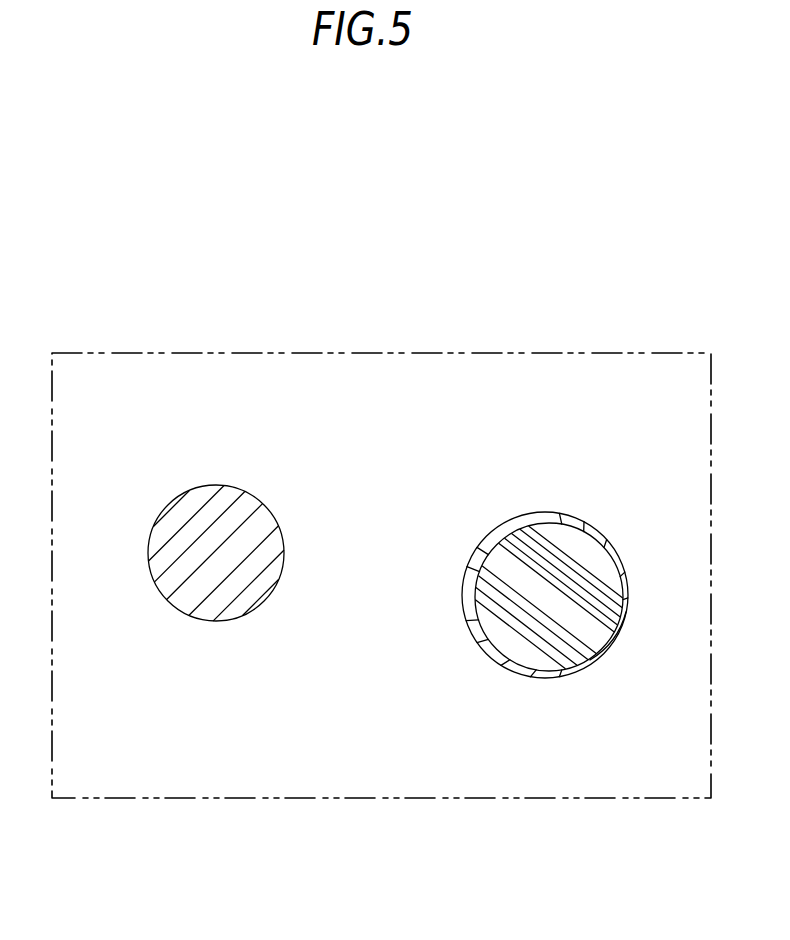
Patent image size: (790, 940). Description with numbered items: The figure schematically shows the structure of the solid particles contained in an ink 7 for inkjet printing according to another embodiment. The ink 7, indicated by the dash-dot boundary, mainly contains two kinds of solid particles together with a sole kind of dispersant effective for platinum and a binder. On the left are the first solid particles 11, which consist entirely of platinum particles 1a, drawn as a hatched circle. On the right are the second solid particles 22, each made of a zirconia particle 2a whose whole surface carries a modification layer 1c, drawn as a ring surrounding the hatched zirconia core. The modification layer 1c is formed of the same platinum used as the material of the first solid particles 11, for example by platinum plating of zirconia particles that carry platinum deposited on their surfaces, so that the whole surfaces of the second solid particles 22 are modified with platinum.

The ink 7 is at (380, 345).
The first solid particles 11 is at (216, 550).
The platinum particles 1a is at (218, 604).
The second solid particles 22 is at (525, 579).
The modification layer 1c is at (480, 549).
The zirconia particles 2a is at (540, 644).